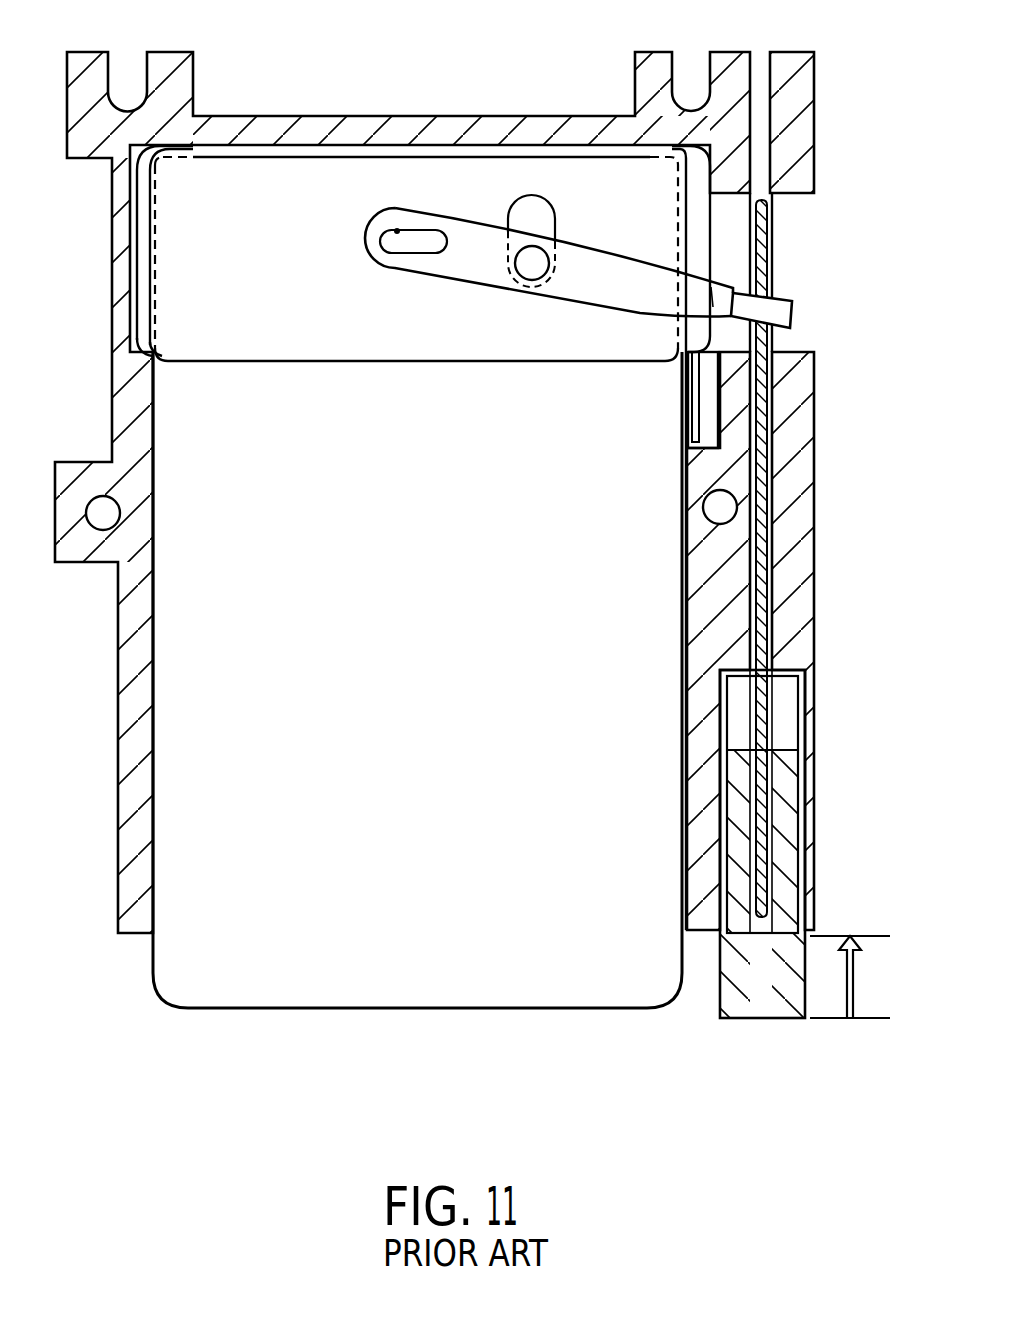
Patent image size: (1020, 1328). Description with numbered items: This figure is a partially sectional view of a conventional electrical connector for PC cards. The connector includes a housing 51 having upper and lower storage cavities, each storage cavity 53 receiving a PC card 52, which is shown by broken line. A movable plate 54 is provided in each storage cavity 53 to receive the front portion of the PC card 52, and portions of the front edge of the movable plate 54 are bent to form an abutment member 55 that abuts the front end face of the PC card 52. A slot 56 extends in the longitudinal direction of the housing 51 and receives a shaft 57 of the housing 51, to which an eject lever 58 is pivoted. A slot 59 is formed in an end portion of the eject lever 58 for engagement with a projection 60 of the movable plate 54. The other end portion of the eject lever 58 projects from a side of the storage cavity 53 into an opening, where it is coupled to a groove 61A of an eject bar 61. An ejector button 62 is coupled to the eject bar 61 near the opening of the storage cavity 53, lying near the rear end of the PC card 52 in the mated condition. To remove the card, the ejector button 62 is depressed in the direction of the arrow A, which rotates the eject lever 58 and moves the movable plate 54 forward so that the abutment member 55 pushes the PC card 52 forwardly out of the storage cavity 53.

The housing 51 is at (130, 690).
The PC card 52 is at (307, 990).
The storage cavity 53 is at (155, 887).
The movable plate 54 is at (280, 190).
The abutment member 55 is at (182, 143).
The slot 56 is at (523, 207).
The shaft 57 is at (538, 262).
The eject lever 58 is at (623, 263).
The slot 59 is at (397, 230).
The projection 60 is at (402, 242).
The eject bar 61 is at (760, 392).
The groove 61A is at (772, 262).
The ejector button 62 is at (785, 847).
The arrow A is at (855, 990).